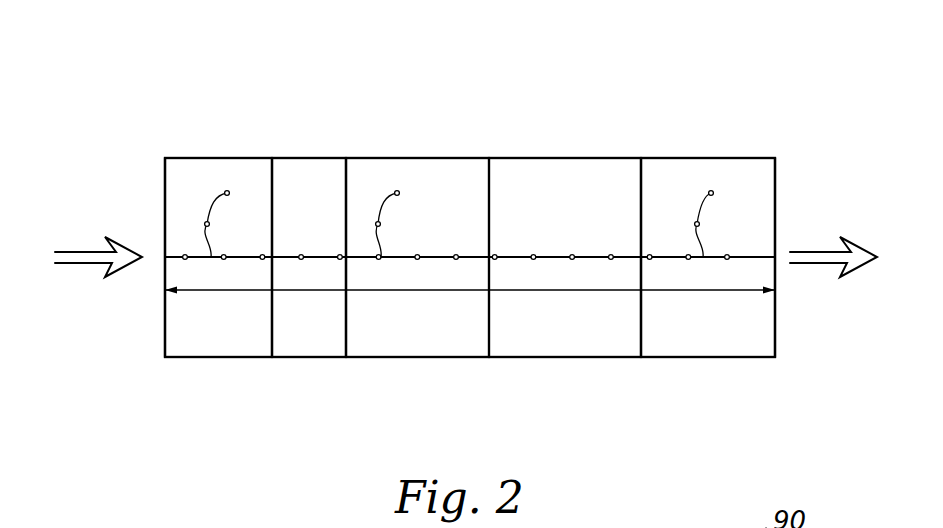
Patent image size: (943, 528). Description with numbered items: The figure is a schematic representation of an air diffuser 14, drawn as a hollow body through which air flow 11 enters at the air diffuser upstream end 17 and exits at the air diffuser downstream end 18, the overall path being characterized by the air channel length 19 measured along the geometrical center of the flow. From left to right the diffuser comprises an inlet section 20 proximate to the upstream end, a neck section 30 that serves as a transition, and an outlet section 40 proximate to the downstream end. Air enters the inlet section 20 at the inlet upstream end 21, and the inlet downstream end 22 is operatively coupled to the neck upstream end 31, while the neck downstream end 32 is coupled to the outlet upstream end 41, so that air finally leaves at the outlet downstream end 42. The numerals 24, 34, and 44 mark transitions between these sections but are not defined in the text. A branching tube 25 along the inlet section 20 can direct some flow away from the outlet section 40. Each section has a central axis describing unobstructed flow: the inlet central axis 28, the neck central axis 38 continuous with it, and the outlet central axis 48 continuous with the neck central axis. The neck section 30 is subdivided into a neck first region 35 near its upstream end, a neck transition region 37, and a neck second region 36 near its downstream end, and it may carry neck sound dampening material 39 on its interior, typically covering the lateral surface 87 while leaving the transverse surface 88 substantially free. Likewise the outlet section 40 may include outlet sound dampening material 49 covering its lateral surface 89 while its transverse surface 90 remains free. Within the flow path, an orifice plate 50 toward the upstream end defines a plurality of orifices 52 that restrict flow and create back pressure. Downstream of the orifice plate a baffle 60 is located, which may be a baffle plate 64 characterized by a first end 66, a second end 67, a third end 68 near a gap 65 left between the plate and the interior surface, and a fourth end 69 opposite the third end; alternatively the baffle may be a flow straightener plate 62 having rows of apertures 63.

The air flow 11 is at (80, 250).
The air diffuser 14 is at (138, 58).
The air diffuser upstream end 17 is at (163, 318).
The air diffuser downstream end 18 is at (777, 320).
The air channel length 19 is at (390, 292).
The inlet section 20 is at (202, 152).
The inlet upstream end 21 is at (187, 358).
The inlet downstream end 22 is at (255, 358).
The first section outlet 24 is at (257, 173).
The branching tube 25 is at (212, 358).
The inlet central axis 28 is at (236, 219).
The neck section 30 is at (428, 152).
The neck upstream end 31 is at (363, 358).
The neck downstream end 32 is at (447, 358).
The second section inlet 34 is at (362, 163).
The neck first region 35 is at (390, 358).
The neck second region 36 is at (427, 358).
The neck transition region 37 is at (403, 358).
The neck central axis 38 is at (407, 219).
The neck sound dampening material 39 is at (390, 167).
The outlet section 40 is at (735, 152).
The outlet upstream end 41 is at (655, 358).
The outlet downstream end 42 is at (765, 358).
The third section inlet 44 is at (662, 158).
The outlet central axis 48 is at (724, 219).
The outlet sound dampening material 49 is at (697, 167).
The orifice plate 50 is at (302, 157).
The orifices 52 is at (303, 348).
The baffle 60 is at (563, 158).
The flow straightener plate 62 is at (498, 358).
The apertures 63 is at (520, 345).
The baffle plate 64 is at (578, 358).
The gap 65 is at (600, 358).
The first end 66 is at (605, 167).
The second end 67 is at (548, 345).
The third end 68 is at (618, 358).
The fourth end 69 is at (632, 358).
The lateral surface 87 is at (457, 167).
The transverse surface 88 is at (477, 167).
The lateral surface 89 is at (752, 167).
The transverse surface 90 is at (765, 167).